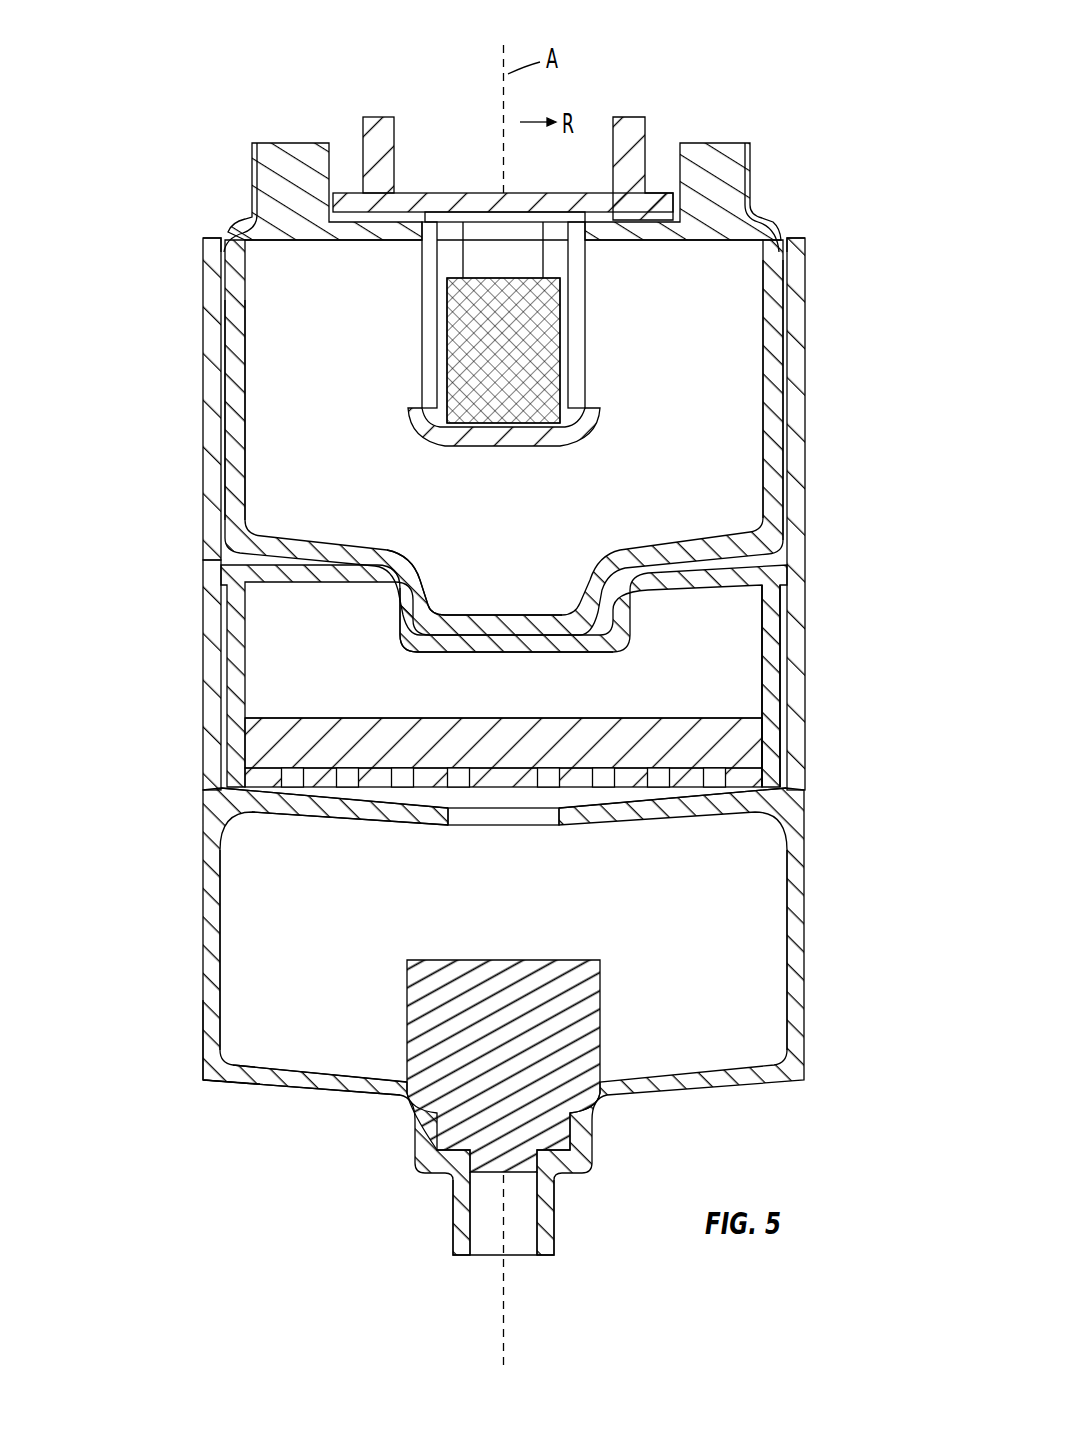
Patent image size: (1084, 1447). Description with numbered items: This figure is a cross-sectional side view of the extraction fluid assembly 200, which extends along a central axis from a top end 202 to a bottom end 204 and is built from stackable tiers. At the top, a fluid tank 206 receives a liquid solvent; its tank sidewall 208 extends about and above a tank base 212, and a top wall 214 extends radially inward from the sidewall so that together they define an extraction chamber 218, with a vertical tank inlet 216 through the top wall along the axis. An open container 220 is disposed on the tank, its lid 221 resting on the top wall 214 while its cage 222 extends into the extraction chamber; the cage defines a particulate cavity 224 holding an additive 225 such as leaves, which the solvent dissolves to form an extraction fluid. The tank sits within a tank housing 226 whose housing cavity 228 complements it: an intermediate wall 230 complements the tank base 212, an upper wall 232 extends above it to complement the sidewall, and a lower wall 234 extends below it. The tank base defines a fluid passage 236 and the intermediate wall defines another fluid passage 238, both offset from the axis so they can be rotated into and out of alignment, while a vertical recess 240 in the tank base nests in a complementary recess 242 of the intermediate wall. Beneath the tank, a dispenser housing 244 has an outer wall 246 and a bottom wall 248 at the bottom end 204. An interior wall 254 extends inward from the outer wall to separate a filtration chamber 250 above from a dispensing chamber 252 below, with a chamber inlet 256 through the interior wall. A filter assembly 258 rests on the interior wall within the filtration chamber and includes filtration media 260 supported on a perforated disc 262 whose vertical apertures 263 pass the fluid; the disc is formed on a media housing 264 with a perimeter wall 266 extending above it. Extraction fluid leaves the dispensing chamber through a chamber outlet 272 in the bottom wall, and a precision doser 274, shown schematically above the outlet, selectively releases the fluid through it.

The extraction fluid assembly 200 is at (147, 70).
The top end 202 is at (188, 174).
The bottom end 204 is at (224, 1261).
The fluid tank 206 is at (776, 228).
The tank sidewall 208 is at (775, 284).
The tank base 212 is at (303, 543).
The top wall 214 is at (359, 232).
The vertical tank inlet 216 is at (396, 252).
The extraction chamber 218 is at (703, 453).
The open container 220 is at (657, 188).
The lid 221 is at (398, 210).
The cage 222 is at (438, 365).
The particulate cavity 224 is at (530, 262).
The additive 225 is at (548, 360).
The tank housing 226 is at (210, 246).
The housing cavity 228 is at (212, 409).
The intermediate wall 230 is at (312, 567).
The upper wall 232 is at (210, 328).
The lower wall 234 is at (215, 660).
The fluid passage 236 is at (534, 598).
The fluid passage 238 is at (532, 666).
The vertical recess 240 is at (447, 600).
The complementary recess 242 is at (422, 652).
The dispenser housing 244 is at (208, 1045).
The outer wall 246 is at (210, 958).
The bottom wall 248 is at (290, 1080).
The filtration chamber 250 is at (696, 648).
The dispensing chamber 252 is at (337, 952).
The interior wall 254 is at (333, 810).
The chamber inlet 256 is at (466, 826).
The filter assembly 258 is at (216, 774).
The filtration media 260 is at (700, 716).
The perforated disc 262 is at (752, 770).
The vertical apertures 263 is at (393, 752).
The media housing 264 is at (773, 690).
The perimeter wall 266 is at (842, 686).
The chamber outlet 272 is at (465, 1268).
The precision doser 274 is at (566, 968).